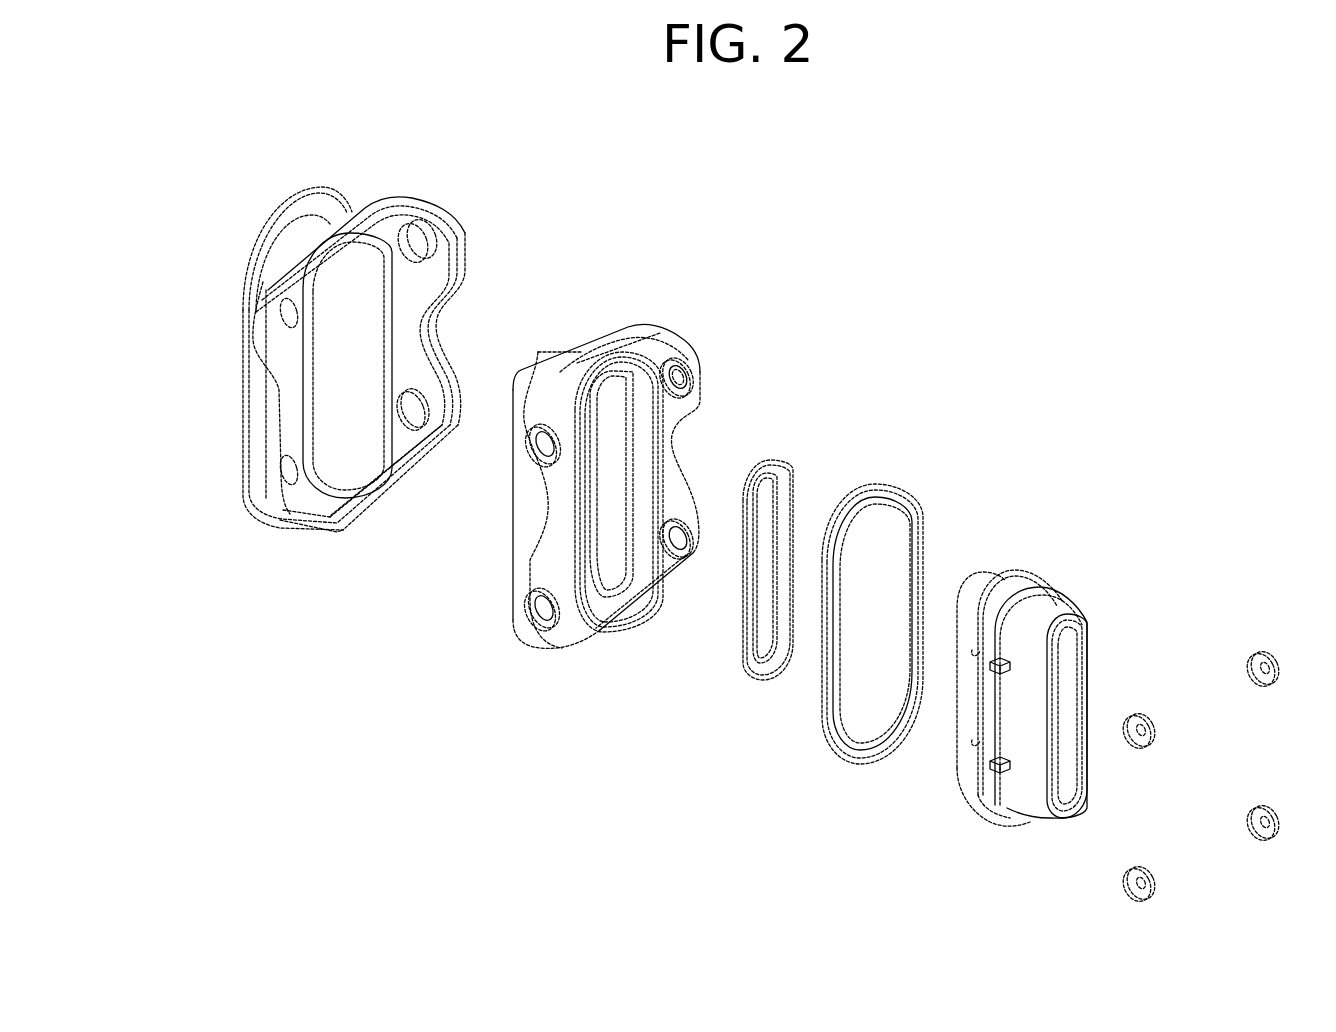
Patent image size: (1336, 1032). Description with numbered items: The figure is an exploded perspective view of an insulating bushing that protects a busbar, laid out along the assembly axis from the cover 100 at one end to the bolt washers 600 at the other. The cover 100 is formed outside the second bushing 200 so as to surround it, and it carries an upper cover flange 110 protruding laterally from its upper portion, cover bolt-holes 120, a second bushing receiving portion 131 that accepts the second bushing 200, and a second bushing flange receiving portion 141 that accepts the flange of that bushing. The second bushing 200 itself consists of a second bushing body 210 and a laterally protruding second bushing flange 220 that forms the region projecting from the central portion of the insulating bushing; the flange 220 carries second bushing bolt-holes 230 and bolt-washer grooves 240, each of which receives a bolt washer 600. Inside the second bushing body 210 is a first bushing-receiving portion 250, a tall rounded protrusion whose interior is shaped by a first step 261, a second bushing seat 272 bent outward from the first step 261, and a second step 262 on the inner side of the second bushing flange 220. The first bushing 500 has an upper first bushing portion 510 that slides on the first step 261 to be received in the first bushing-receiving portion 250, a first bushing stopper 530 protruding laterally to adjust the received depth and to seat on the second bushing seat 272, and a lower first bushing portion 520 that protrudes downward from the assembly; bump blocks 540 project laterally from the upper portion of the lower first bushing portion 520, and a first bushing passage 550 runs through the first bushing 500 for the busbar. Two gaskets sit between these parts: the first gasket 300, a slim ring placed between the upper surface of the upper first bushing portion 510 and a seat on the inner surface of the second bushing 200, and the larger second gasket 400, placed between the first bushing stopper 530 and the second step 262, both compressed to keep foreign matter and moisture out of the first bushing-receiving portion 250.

The cover 100 is at (262, 546).
The upper cover flange 110 is at (250, 253).
The cover bolt-hole 120 is at (413, 243).
The second bushing receiving portion 131 is at (324, 437).
The second bushing flange receiving portion 141 is at (303, 502).
The second bushing 200 is at (535, 679).
The second bushing body 210 is at (542, 362).
The second bushing flange 220 is at (657, 350).
The second bushing bolt-hole 230 is at (692, 361).
The bolt-washer groove 240 is at (700, 384).
The first bushing-receiving portion 250 is at (586, 563).
The first step 261 is at (605, 505).
The second step 262 is at (660, 458).
The second bushing seat 272 is at (647, 434).
The first gasket 300 is at (763, 683).
The second gasket 400 is at (840, 753).
The first bushing 500 is at (965, 842).
The upper first bushing portion 510 is at (981, 575).
The lower first bushing portion 520 is at (1043, 613).
The first bushing stopper 530 is at (1035, 571).
The bump block 540 is at (1008, 666).
The first bushing passage 550 is at (1067, 750).
The bolt washer 600 is at (1150, 715).